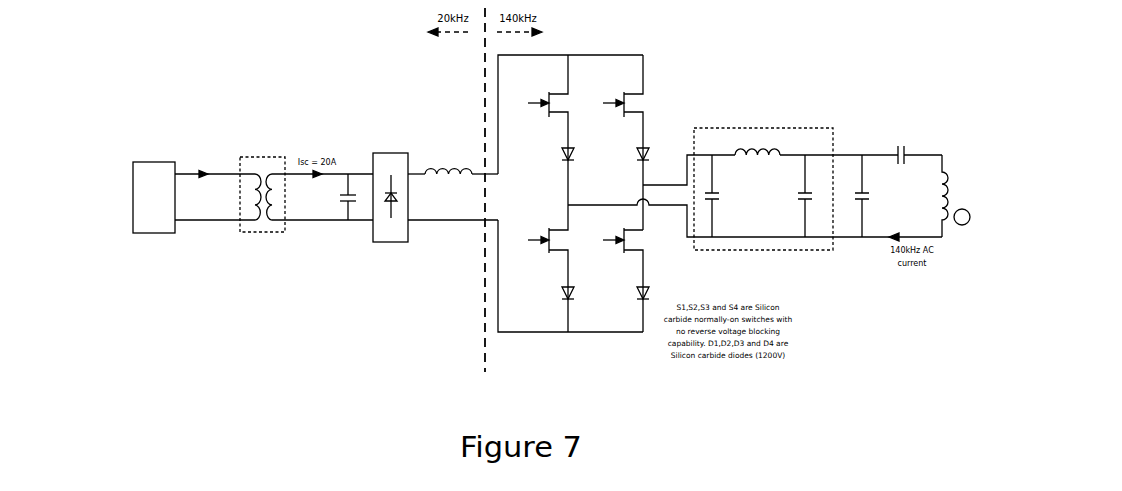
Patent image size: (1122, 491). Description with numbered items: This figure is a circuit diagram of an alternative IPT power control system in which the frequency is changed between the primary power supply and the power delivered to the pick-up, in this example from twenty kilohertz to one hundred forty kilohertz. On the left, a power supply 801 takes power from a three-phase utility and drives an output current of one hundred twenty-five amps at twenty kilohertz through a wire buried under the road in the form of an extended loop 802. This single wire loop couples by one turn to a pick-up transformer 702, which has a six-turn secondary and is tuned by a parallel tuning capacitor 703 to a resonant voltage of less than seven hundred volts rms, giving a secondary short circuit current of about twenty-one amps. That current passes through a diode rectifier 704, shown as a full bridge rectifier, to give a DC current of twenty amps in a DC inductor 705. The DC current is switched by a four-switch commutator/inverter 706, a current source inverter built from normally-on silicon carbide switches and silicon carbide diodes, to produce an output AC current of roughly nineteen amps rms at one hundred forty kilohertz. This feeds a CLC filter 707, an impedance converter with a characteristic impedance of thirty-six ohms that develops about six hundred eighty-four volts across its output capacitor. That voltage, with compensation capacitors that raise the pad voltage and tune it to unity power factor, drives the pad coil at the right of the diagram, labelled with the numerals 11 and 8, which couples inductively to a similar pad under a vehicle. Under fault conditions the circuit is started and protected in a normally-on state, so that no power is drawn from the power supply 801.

The power supply 801 is at (154, 216).
The extended loop 802 is at (215, 169).
The pick-up/transformer 702 is at (264, 218).
The parallel tuning capacitor 703 is at (341, 215).
The diode rectifier 704 is at (390, 161).
The DC inductor 705 is at (453, 145).
The commutator/inverter 706 is at (596, 222).
The CLC filter 707 is at (818, 163).
The pad inductor Lpad 11 is at (970, 199).
The pad 8 is at (962, 217).